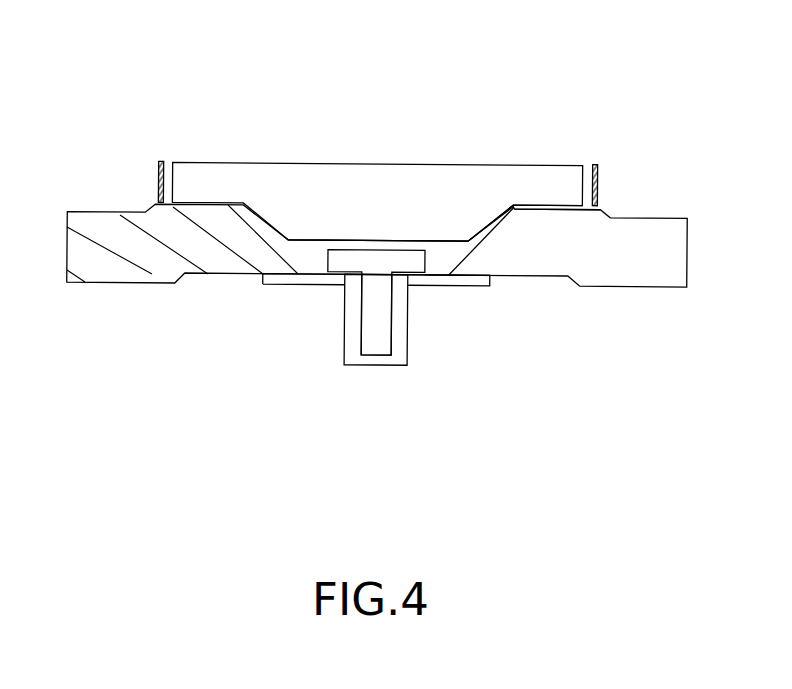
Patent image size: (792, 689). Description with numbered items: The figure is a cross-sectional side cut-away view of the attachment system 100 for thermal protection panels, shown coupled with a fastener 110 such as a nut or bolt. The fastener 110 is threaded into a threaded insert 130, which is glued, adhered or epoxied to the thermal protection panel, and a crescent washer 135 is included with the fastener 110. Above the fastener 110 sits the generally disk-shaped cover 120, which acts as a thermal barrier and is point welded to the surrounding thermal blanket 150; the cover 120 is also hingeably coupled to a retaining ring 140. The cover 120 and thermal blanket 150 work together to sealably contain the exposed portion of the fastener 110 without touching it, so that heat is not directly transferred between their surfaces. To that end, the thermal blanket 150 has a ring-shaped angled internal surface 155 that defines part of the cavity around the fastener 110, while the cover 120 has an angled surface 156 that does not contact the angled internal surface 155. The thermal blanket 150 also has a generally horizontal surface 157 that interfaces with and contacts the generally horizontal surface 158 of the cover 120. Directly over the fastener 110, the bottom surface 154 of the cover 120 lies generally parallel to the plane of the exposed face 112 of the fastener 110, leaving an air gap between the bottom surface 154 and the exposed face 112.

The attachment system 100 is at (603, 94).
The fastener 110 is at (372, 337).
The exposed face 112 is at (347, 250).
The cover 120 is at (326, 138).
The threaded insert 130 is at (407, 309).
The crescent washer 135 is at (426, 273).
The retaining ring 140 is at (597, 200).
The thermal blanket 150 is at (406, 293).
The bottom surface 154 is at (383, 242).
The angled internal surface 155 is at (495, 228).
The angled surface 156 is at (499, 238).
The generally horizontal surface 157 is at (577, 210).
The generally horizontal surface 158 is at (540, 205).